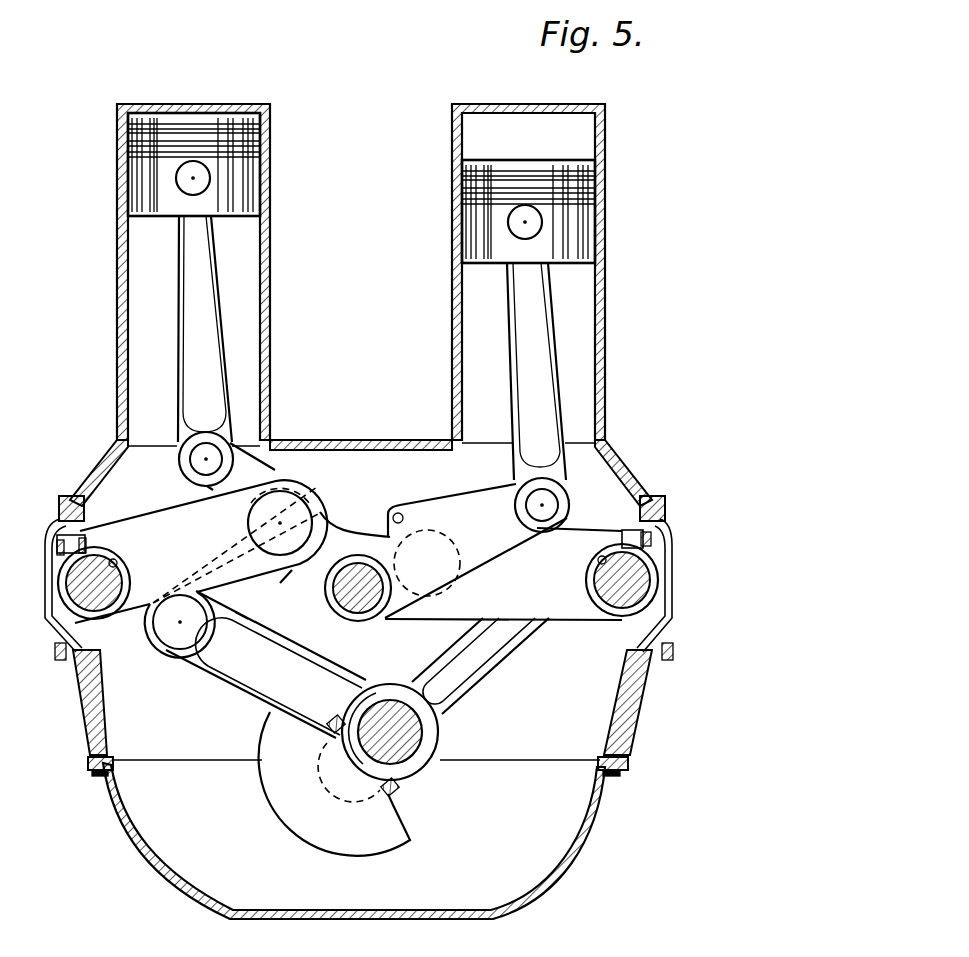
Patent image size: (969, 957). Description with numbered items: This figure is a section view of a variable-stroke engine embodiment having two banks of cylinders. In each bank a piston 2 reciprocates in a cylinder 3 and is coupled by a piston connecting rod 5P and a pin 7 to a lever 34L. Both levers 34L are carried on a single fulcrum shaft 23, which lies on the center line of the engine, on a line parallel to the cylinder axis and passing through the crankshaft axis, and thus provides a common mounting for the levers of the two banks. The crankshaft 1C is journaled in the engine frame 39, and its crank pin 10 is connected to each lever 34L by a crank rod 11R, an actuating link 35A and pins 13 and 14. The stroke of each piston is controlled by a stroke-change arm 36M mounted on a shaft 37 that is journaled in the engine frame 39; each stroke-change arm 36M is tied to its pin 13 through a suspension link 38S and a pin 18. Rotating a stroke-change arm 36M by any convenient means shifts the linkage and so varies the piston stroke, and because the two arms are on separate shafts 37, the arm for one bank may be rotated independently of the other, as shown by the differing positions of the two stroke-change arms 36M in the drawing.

The cylinder 3 is at (597, 138).
The piston 2 is at (585, 216).
The piston connecting rod 5P is at (220, 296).
The pin 7 is at (190, 463).
The engine frame 39 is at (622, 467).
The lever 34L is at (243, 470).
The pin 18 is at (298, 512).
The pin 14 is at (337, 531).
The shaft 37 is at (70, 586).
The actuating link 35A is at (287, 589).
The suspension link 38S is at (241, 603).
The stroke-change arm 36M is at (123, 603).
The pin 13 is at (173, 637).
The fulcrum shaft 23 is at (366, 614).
The crank rod 11R is at (317, 661).
The crank pin 10 is at (420, 735).
The crankshaft 1C is at (393, 799).